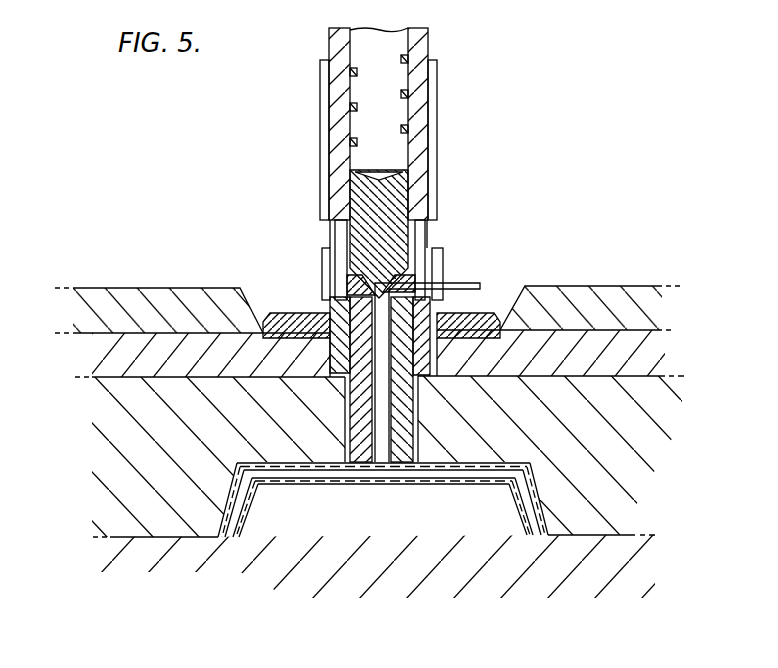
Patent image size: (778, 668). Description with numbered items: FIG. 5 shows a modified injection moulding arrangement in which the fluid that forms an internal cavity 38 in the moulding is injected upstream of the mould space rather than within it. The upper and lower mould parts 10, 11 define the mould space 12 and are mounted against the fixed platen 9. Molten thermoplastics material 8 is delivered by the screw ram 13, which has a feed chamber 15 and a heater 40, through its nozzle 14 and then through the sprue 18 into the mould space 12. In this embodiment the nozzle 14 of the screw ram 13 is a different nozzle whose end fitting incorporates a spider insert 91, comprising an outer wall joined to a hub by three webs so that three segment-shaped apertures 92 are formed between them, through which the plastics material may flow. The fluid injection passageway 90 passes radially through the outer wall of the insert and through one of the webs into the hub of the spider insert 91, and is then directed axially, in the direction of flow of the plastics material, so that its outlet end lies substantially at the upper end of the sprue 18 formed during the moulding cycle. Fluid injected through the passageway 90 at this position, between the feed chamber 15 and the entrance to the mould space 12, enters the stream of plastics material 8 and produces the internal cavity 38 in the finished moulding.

The molten thermoplastics material 8 is at (250, 462).
The fixed platen 9 is at (118, 288).
The upper mould part 10 is at (125, 445).
The lower mould part 11 is at (375, 565).
The mould space 12 is at (284, 455).
The screw ram 13 is at (310, 54).
The nozzle 14 is at (312, 304).
The feed chamber 15 is at (355, 196).
The sprue 18 is at (395, 412).
The internal cavity 38 is at (285, 490).
The heater 40 is at (322, 118).
The fluid injection passageway 90 is at (466, 282).
The spider insert 91 is at (338, 281).
The segment-shaped apertures 92 is at (343, 263).